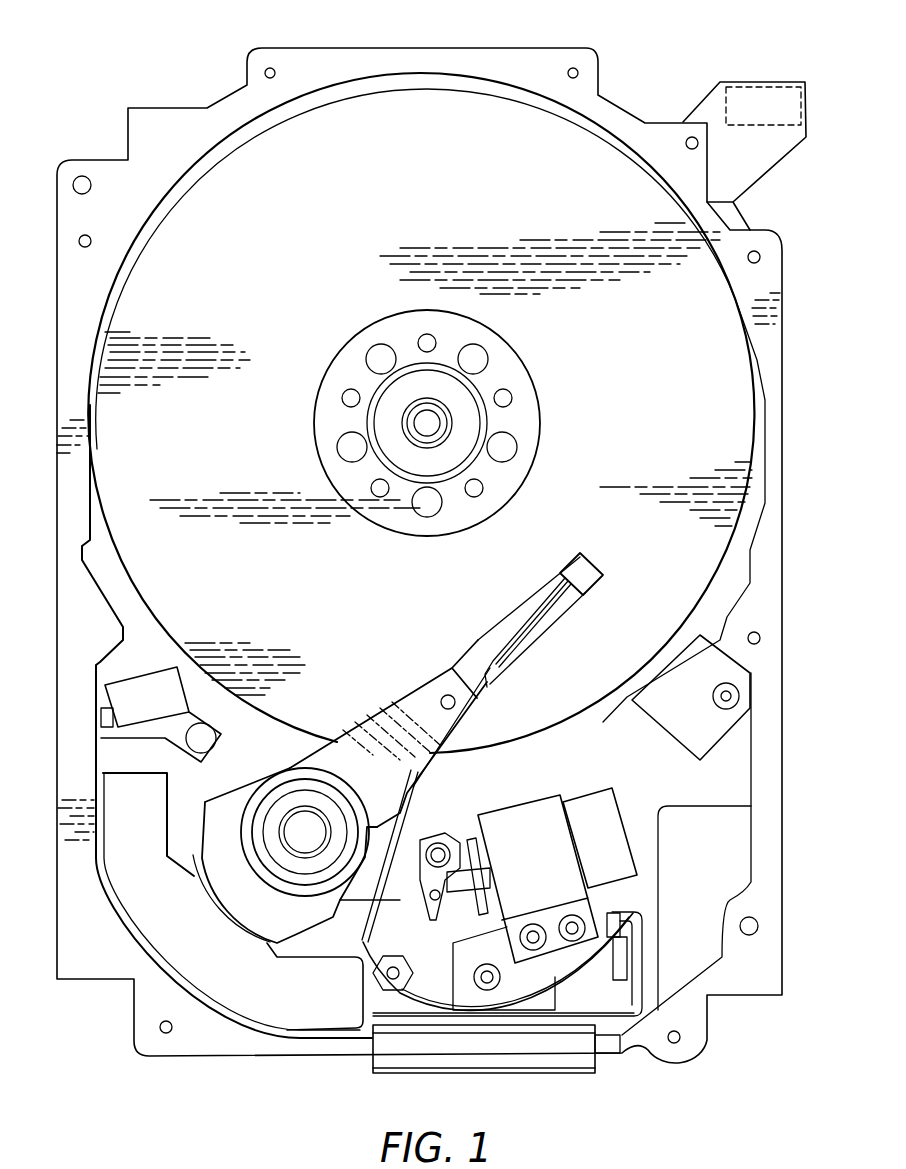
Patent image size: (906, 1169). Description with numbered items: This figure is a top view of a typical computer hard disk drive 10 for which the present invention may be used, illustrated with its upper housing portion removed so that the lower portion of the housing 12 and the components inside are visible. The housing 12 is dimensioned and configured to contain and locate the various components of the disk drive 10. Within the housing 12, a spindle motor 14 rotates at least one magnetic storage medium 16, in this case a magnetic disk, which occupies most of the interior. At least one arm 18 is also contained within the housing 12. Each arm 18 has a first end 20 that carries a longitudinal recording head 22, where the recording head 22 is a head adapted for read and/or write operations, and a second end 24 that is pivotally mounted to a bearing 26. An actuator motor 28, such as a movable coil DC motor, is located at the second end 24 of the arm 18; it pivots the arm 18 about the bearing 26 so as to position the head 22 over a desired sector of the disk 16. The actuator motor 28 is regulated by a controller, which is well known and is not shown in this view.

The hard disk drive 10 is at (108, 97).
The housing 12 is at (553, 60).
The spindle motor 14 is at (420, 424).
The magnetic storage medium 16 is at (341, 219).
The arm 18 is at (412, 715).
The first end 20 is at (527, 603).
The longitudinal recording head 22 is at (582, 568).
The second end 24 is at (327, 774).
The bearing 26 is at (295, 823).
The actuator motor 28 is at (201, 950).